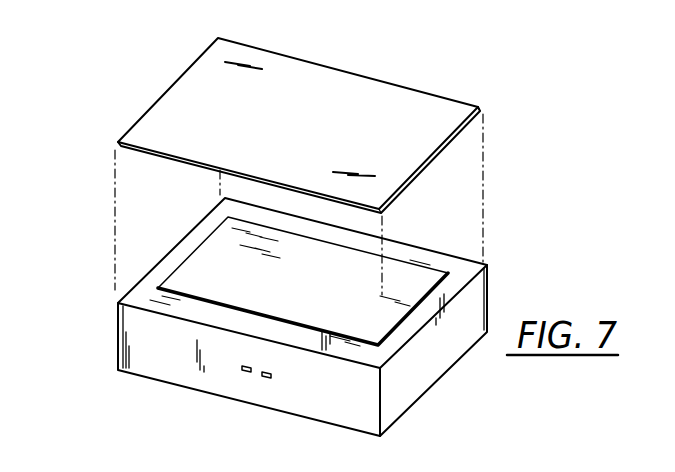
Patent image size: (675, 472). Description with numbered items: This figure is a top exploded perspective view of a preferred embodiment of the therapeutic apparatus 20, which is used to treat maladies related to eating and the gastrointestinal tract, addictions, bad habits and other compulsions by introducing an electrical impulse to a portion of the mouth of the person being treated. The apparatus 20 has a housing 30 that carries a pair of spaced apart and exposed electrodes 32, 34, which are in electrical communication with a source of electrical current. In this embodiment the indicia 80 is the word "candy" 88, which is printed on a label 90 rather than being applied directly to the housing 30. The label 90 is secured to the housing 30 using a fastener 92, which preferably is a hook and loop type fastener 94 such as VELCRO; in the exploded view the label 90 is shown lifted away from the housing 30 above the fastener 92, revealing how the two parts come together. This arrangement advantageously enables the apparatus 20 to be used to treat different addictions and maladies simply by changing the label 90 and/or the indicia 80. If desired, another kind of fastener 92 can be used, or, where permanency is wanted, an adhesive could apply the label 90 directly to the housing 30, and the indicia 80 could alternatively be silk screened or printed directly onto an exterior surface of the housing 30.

The therapeutic apparatus 20 is at (100, 364).
The housing 30 is at (155, 270).
The electrode 32 is at (244, 372).
The electrode 34 is at (266, 380).
The indicia 80 is at (372, 114).
The word "candy" 88 is at (329, 112).
The label 90 is at (478, 107).
The fastener 92 is at (450, 247).
The hook and loop type fastener 94 is at (405, 275).